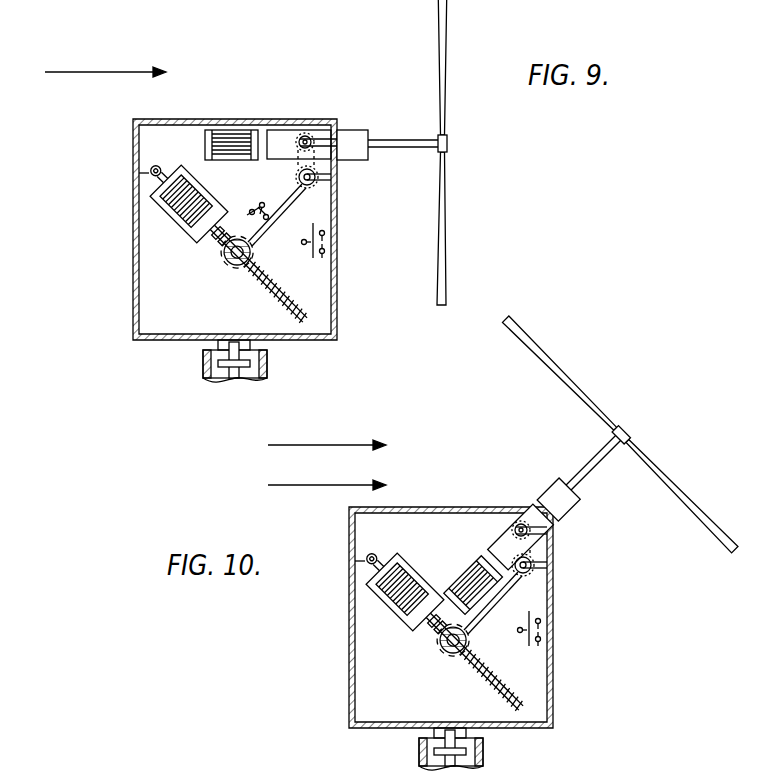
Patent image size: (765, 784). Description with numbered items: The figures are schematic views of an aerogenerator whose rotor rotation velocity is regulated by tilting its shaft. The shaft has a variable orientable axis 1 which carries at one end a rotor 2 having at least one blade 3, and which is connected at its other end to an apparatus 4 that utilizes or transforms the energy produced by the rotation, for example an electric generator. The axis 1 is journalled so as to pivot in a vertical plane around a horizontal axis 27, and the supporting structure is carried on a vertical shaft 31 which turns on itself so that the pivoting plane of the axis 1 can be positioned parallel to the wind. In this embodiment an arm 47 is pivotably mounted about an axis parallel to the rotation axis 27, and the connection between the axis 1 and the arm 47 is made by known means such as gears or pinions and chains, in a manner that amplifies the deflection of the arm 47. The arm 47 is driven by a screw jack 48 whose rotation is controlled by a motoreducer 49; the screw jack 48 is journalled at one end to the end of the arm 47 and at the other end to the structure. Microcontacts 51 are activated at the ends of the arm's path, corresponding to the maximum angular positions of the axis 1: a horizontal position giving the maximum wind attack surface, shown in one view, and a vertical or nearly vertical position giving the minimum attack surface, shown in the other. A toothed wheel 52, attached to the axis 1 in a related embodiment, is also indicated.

In FIG. 9, the variable orientation axis 1 is at (350, 138).
In FIG. 10, the variable orientation axis 1 is at (545, 498).
In FIG. 9, the rotor 2 is at (447, 146).
In FIG. 10, the rotor 2 is at (632, 436).
In FIG. 9, the blade 3 is at (447, 4).
In FIG. 10, the blade 3 is at (532, 340).
In FIG. 9, the apparatus 4 is at (236, 136).
In FIG. 10, the apparatus 4 is at (470, 565).
In FIG. 9, the horizontal axis 27 is at (305, 134).
In FIG. 10, the horizontal axis 27 is at (523, 523).
In FIG. 9, the vertical shaft 31 is at (215, 372).
In FIG. 9, the arm 47 is at (316, 185).
In FIG. 10, the arm 47 is at (548, 580).
In FIG. 9, the screw jack 48 is at (300, 300).
In FIG. 10, the screw jack 48 is at (525, 680).
In FIG. 9, the motoreducer 49 is at (168, 213).
In FIG. 10, the motoreducer 49 is at (384, 601).
In FIG. 9, the microcontacts 51 is at (249, 201).
In FIG. 9, the toothed wheel 52 is at (312, 250).
In FIG. 10, the toothed wheel 52 is at (562, 631).